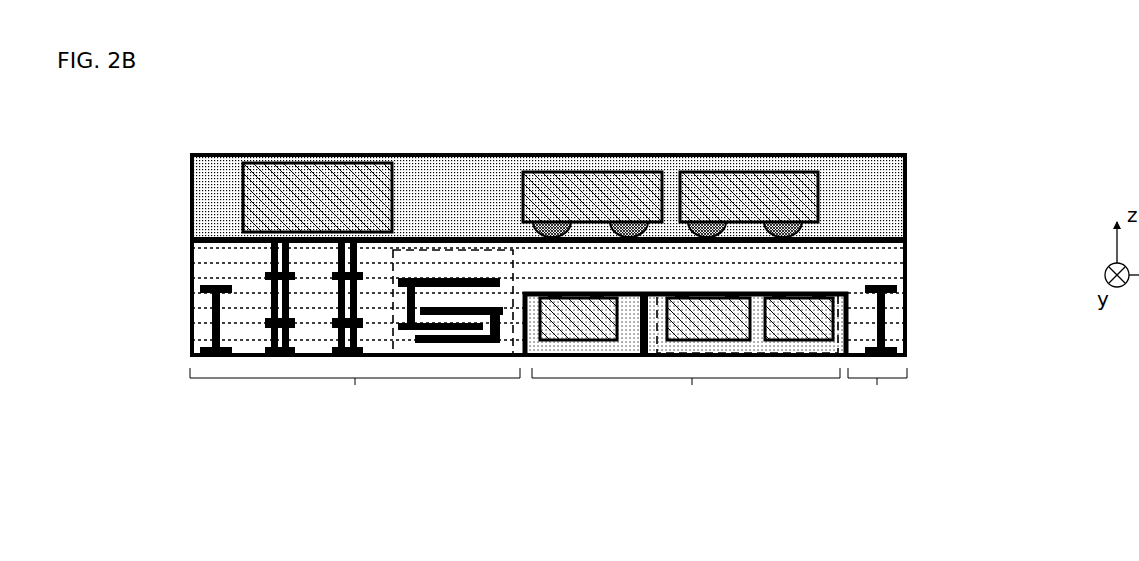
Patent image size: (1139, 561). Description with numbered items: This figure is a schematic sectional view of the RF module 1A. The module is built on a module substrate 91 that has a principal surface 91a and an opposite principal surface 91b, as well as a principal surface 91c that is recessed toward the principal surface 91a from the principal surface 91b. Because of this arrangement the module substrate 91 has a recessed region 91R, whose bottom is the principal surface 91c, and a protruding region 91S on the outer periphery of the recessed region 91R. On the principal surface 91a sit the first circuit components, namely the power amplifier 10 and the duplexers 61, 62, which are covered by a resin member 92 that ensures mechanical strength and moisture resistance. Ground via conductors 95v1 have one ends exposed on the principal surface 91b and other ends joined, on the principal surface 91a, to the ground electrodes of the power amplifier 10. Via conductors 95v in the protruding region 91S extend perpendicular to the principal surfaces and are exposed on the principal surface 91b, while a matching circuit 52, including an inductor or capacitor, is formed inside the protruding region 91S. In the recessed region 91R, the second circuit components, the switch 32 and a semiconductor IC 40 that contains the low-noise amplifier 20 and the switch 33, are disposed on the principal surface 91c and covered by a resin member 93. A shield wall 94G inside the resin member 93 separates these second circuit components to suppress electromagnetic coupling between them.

The RF module 1A is at (962, 120).
The power amplifier 10 is at (326, 163).
The duplexer 61 is at (586, 172).
The duplexer 62 is at (744, 172).
The resin member 92 is at (888, 188).
The principal surface 91a is at (890, 236).
The module substrate 91 is at (893, 256).
The ground via conductors 95v1 is at (345, 246).
The via conductors 95v is at (215, 357).
The matching circuit 52 is at (436, 360).
The principal surface 91b is at (466, 363).
The protruding region 91S is at (355, 385).
The principal surface 91c is at (530, 299).
The resin member 93 is at (543, 345).
The switch 32 is at (586, 333).
The shield wall 94G is at (641, 355).
The low-noise amplifier 20 is at (678, 346).
The semiconductor IC 40 is at (752, 347).
The switch 33 is at (810, 346).
The recessed region 91R is at (692, 385).